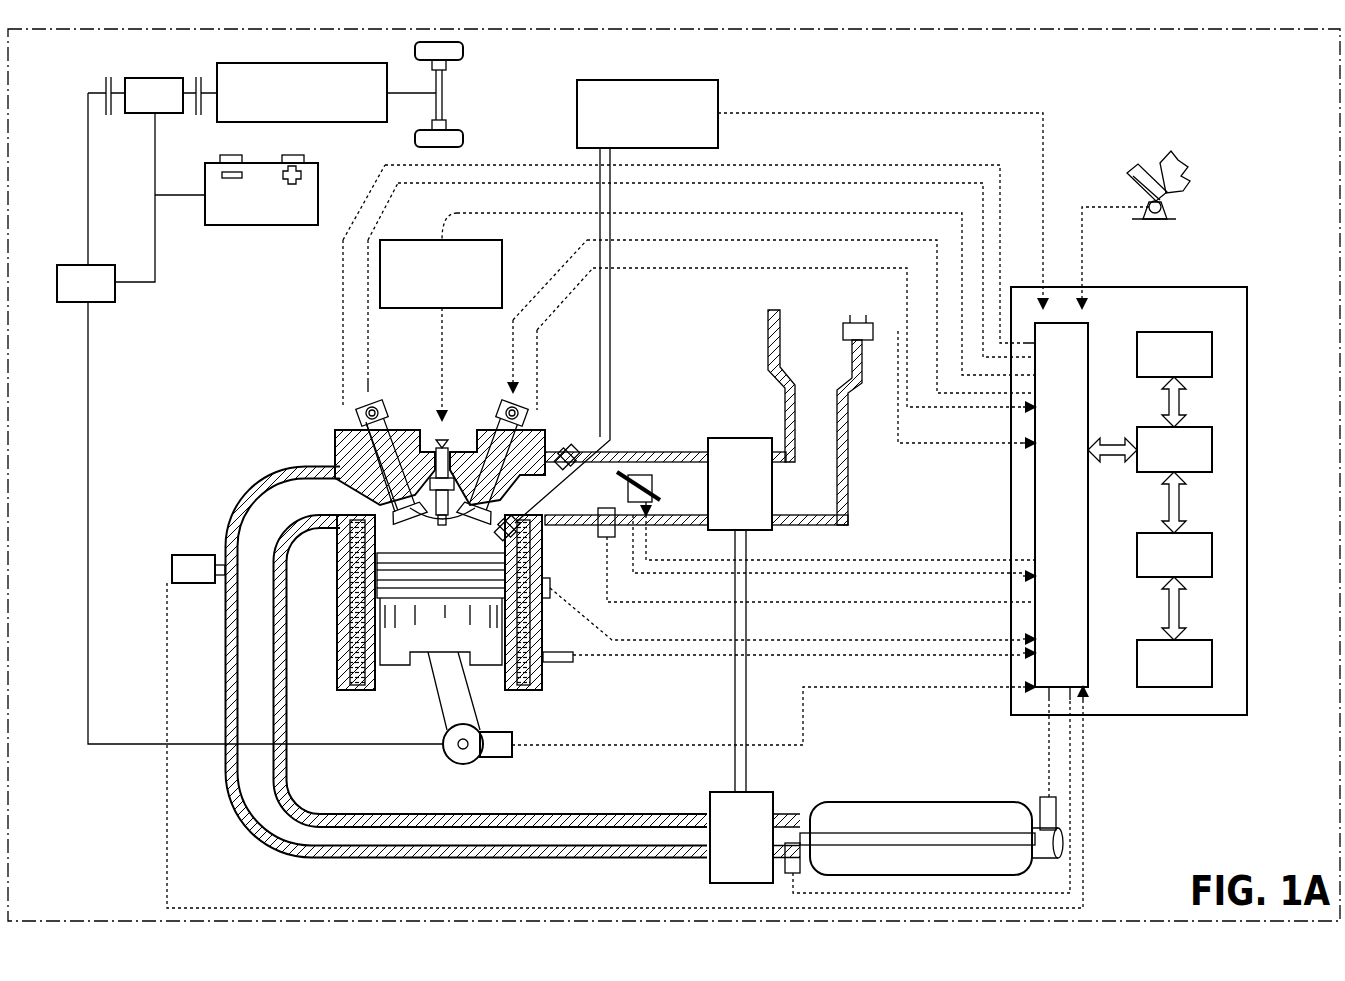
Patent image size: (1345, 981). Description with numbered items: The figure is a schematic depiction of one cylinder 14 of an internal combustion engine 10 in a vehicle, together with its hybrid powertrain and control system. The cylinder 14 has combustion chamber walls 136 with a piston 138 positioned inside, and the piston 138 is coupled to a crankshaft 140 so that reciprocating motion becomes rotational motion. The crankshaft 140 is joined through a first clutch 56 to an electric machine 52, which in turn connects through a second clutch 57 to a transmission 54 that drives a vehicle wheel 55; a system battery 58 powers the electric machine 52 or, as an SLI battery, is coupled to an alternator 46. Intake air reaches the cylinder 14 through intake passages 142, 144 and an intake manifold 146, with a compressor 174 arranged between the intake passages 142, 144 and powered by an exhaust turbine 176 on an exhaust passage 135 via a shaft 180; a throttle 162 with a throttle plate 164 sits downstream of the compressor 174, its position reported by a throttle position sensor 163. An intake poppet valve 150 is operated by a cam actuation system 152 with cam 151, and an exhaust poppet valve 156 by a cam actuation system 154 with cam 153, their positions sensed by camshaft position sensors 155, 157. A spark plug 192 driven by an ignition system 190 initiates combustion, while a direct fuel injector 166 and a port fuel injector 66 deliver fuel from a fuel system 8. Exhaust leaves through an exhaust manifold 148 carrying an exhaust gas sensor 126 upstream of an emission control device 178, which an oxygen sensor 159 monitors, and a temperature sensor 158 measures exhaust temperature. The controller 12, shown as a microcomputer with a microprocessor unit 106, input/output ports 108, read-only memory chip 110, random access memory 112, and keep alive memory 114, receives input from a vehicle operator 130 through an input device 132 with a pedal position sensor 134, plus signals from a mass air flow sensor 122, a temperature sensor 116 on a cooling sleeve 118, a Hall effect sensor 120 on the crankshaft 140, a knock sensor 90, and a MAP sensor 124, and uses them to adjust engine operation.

The fuel system 8 is at (686, 80).
The internal combustion engine 10 is at (262, 380).
The controller 12 is at (1247, 300).
The cylinder 14 is at (380, 555).
The alternator 46 is at (60, 302).
The electric machine 52 is at (142, 78).
The transmission 54 is at (374, 122).
The vehicle wheel 55 is at (415, 50).
The first clutch 56 is at (105, 86).
The second clutch 57 is at (196, 86).
The system battery 58 is at (266, 225).
The port fuel injector 66 is at (565, 450).
The knock sensor 90 is at (565, 662).
The microprocessor unit 106 is at (1247, 440).
The input/output ports 108 is at (1090, 330).
The read-only memory chip 110 is at (1212, 352).
The random access memory 112 is at (1212, 556).
The keep alive memory 114 is at (1212, 666).
The temperature sensor 116 is at (549, 598).
The cooling sleeve 118 is at (540, 682).
The Hall effect sensor 120 is at (505, 758).
The mass air flow sensor 122 is at (868, 323).
The MAP sensor 124 is at (610, 540).
The exhaust gas sensor 126 is at (172, 560).
The vehicle operator 130 is at (1186, 176).
The input device 132 is at (1134, 184).
The pedal position sensor 134 is at (1165, 206).
The exhaust passage 135 is at (626, 814).
The combustion chamber walls 136 is at (372, 692).
The piston 138 is at (425, 655).
The crankshaft 140 is at (452, 762).
The intake passage 142 is at (815, 417).
The intake passage 144 is at (759, 488).
The intake manifold 146 is at (626, 488).
The exhaust manifold 148 is at (466, 662).
The intake poppet valve 150 is at (448, 456).
The cam 151 is at (502, 406).
The cam actuation system 152 is at (506, 400).
The cam 153 is at (385, 415).
The cam actuation system 154 is at (382, 400).
The camshaft position sensor 155 is at (522, 416).
The exhaust poppet valve 156 is at (362, 440).
The camshaft position sensor 157 is at (360, 406).
The temperature sensor 158 is at (790, 874).
The oxygen sensor 159 is at (1040, 800).
The throttle 162 is at (650, 475).
The throttle position sensor 163 is at (650, 516).
The throttle plate 164 is at (623, 470).
The direct fuel injector 166 is at (514, 520).
The compressor 174 is at (740, 484).
The exhaust turbine 176 is at (741, 837).
The emission control device 178 is at (905, 802).
The shaft 180 is at (750, 760).
The ignition system 190 is at (400, 240).
The spark plug 192 is at (436, 462).